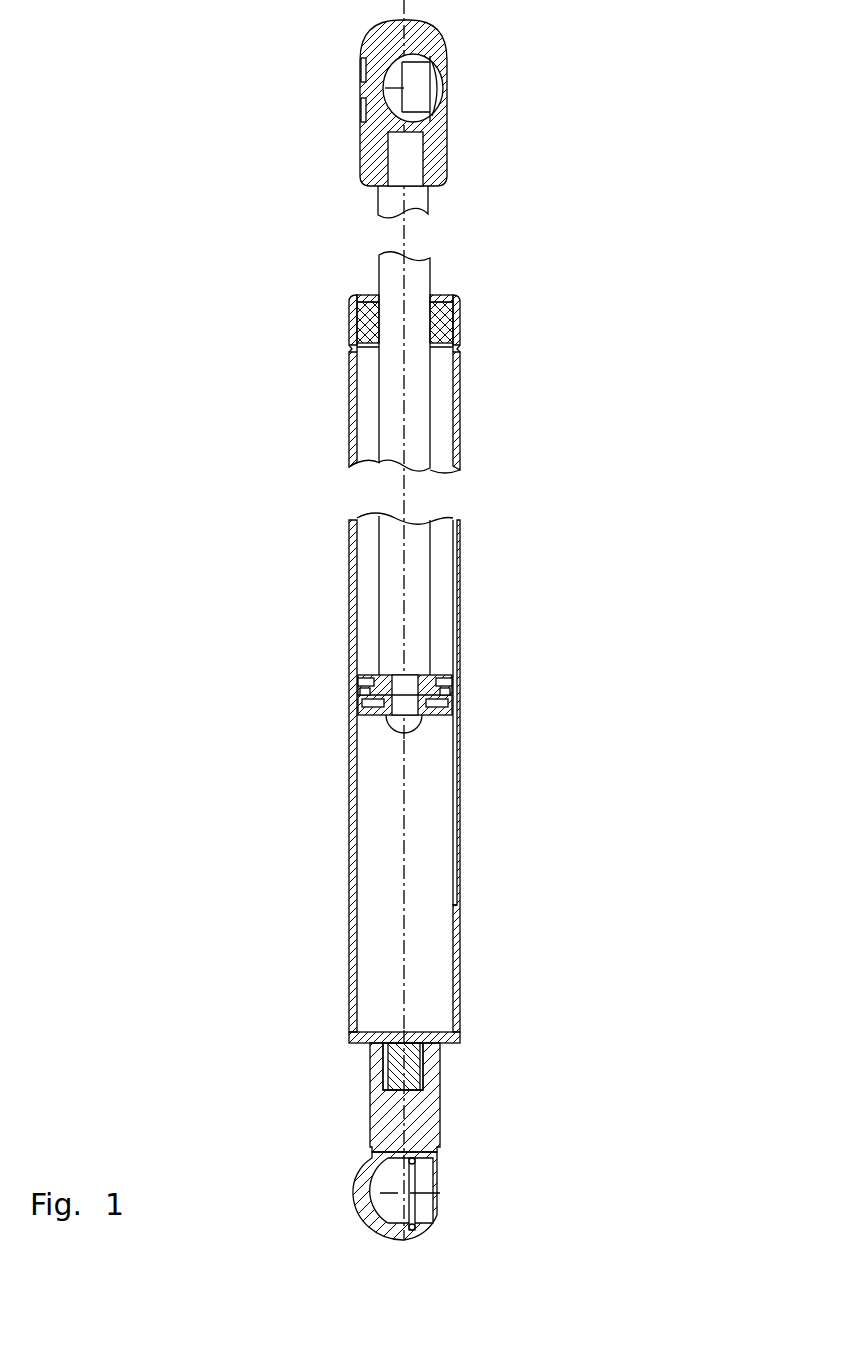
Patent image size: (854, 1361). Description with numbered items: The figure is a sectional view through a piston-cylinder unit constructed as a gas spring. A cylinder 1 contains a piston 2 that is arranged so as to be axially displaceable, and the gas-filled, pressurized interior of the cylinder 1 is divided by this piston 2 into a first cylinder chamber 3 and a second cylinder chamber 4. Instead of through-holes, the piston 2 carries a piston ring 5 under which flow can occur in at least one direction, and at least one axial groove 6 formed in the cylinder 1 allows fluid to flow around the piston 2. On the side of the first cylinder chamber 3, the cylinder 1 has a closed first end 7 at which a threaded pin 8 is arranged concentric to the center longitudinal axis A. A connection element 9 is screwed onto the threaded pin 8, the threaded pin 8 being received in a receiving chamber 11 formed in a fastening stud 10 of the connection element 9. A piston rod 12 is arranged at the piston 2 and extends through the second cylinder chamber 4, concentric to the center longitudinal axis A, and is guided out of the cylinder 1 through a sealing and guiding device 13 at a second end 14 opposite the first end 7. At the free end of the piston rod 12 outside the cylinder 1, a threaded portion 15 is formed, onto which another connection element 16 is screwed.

The cylinder 1 is at (352, 563).
The piston 2 is at (448, 700).
The first cylinder chamber 3 is at (376, 893).
The second cylinder chamber 4 is at (440, 600).
The piston ring 5 is at (360, 688).
The axial groove 6 is at (457, 545).
The first end 7 is at (355, 1040).
The threaded pin 8 is at (410, 1067).
The connection element 9 is at (437, 1093).
The fastening stud 10 is at (380, 1118).
The receiving chamber 11 is at (383, 1080).
The piston rod 12 is at (393, 420).
The sealing and guiding device 13 is at (473, 323).
The second end 14 is at (352, 300).
The threaded portion 15 is at (418, 145).
The connection element 16 is at (358, 137).
The center longitudinal axis A is at (403, 228).